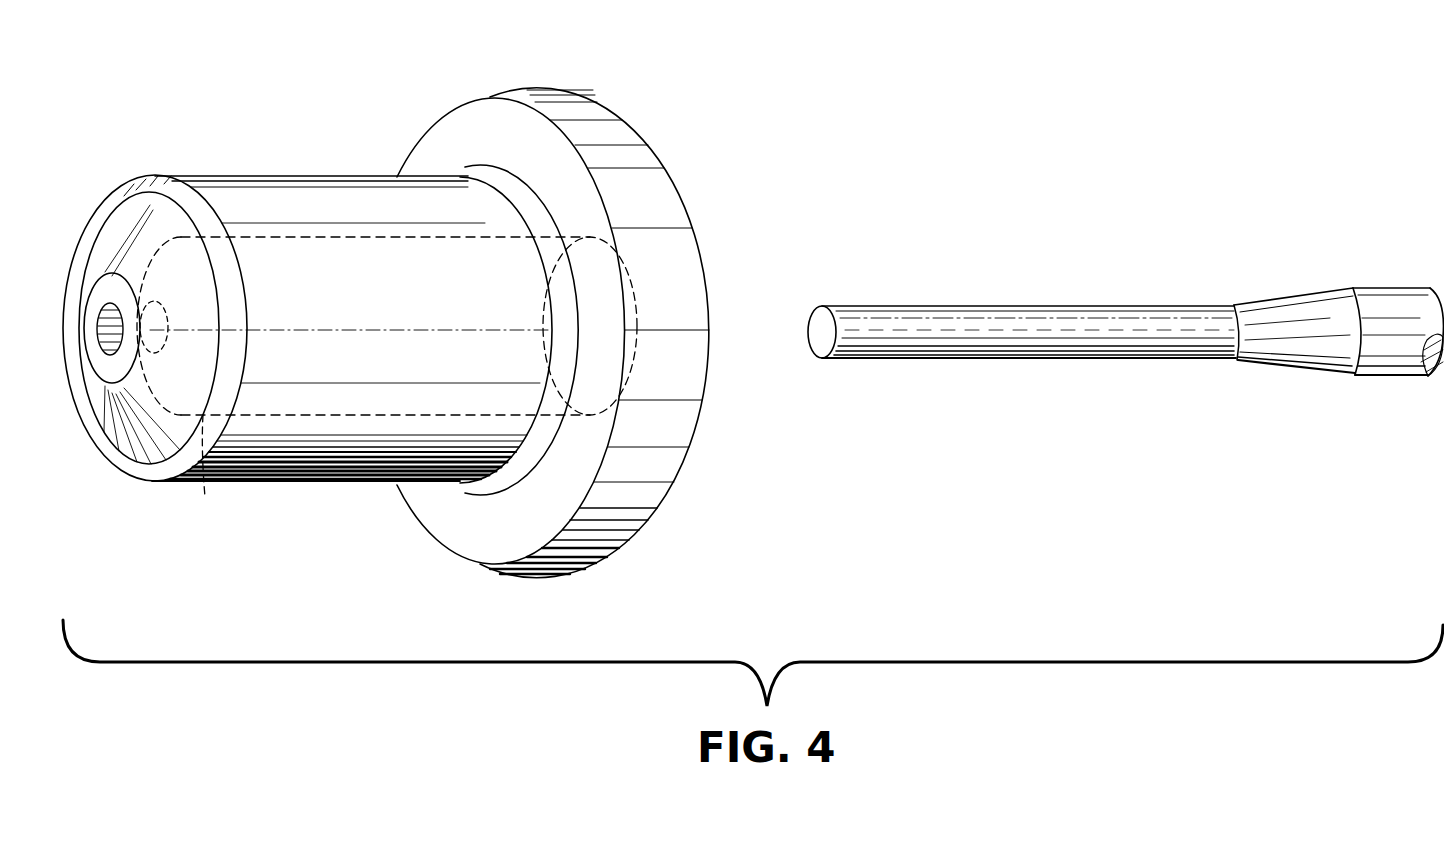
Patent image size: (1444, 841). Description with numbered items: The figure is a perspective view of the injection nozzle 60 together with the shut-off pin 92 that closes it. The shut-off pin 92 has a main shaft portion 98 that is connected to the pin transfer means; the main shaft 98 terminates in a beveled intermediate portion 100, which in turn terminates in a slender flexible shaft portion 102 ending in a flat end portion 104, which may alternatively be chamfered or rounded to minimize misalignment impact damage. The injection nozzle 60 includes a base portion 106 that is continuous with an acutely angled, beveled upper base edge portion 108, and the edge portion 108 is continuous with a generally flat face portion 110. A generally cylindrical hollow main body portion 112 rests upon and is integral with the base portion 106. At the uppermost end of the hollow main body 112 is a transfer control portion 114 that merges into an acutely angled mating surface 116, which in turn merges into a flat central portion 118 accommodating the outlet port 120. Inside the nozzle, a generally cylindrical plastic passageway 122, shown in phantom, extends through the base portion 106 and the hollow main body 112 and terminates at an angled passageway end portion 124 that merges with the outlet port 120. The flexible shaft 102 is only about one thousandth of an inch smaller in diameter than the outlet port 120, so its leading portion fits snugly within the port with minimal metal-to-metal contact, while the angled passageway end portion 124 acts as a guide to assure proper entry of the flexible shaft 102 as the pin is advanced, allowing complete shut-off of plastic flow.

The injection nozzle 60 is at (704, 478).
The shut-off pin 92 is at (1073, 371).
The main shaft portion 98 is at (1388, 298).
The beveled intermediate portion 100 is at (1287, 297).
The flexible shaft portion 102 is at (987, 305).
The end portion 104 is at (820, 320).
The base portion 106 is at (620, 133).
The beveled upper base edge portion 108 is at (517, 95).
The flat face portion 110 is at (583, 207).
The hollow main body portion 112 is at (280, 177).
The transfer control portion 114 is at (187, 200).
The angled mating surface 116 is at (160, 210).
The flat central portion 118 is at (118, 368).
The outlet port 120 is at (106, 273).
The plastic passageway 122 is at (338, 237).
The angled passageway end portion 124 is at (207, 500).